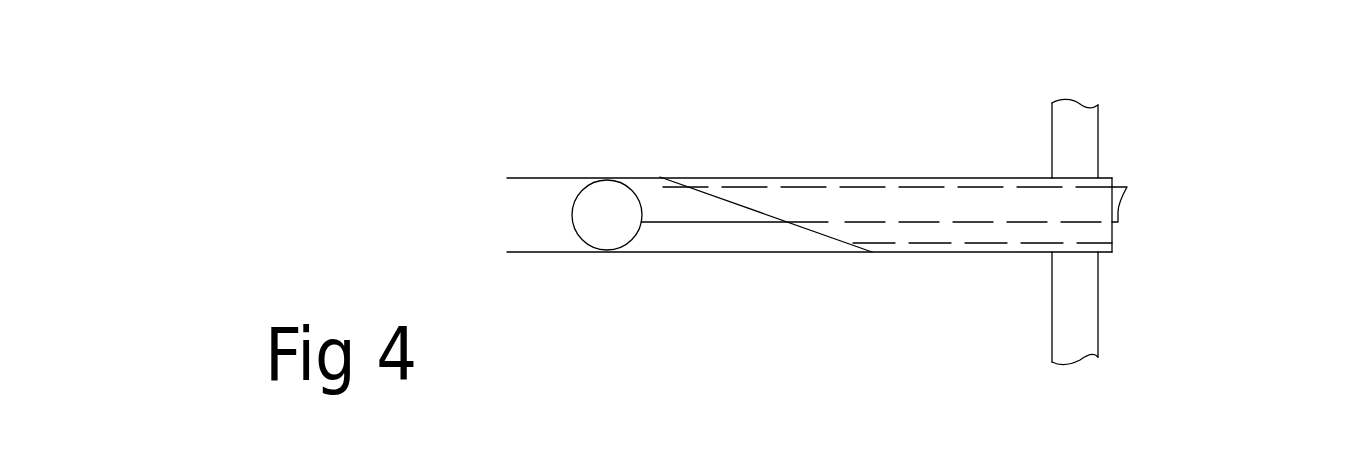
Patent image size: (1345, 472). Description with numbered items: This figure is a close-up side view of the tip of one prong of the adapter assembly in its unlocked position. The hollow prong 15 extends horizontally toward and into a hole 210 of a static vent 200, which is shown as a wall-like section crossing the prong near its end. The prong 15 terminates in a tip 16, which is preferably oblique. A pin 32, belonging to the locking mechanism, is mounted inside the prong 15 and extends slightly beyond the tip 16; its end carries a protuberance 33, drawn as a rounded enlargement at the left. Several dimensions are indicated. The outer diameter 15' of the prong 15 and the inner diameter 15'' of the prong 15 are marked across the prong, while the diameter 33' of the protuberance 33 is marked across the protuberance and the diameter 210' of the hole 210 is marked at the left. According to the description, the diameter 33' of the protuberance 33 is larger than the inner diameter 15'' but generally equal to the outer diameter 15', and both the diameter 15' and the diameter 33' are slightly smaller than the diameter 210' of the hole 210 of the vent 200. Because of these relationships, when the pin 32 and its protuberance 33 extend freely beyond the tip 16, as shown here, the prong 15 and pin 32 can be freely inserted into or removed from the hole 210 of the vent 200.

The prong 15 is at (889, 253).
The tip 16 is at (872, 178).
The pin 32 is at (692, 213).
The protuberance 33 is at (675, 143).
The static vent 200 is at (1087, 134).
The hole 210 is at (1206, 159).
The diameter of the hole 210' is at (535, 215).
The diameter of the protuberance 33' is at (608, 215).
The outer diameter of the prong 15' is at (958, 215).
The inner diameter of the prong 15'' is at (1041, 215).